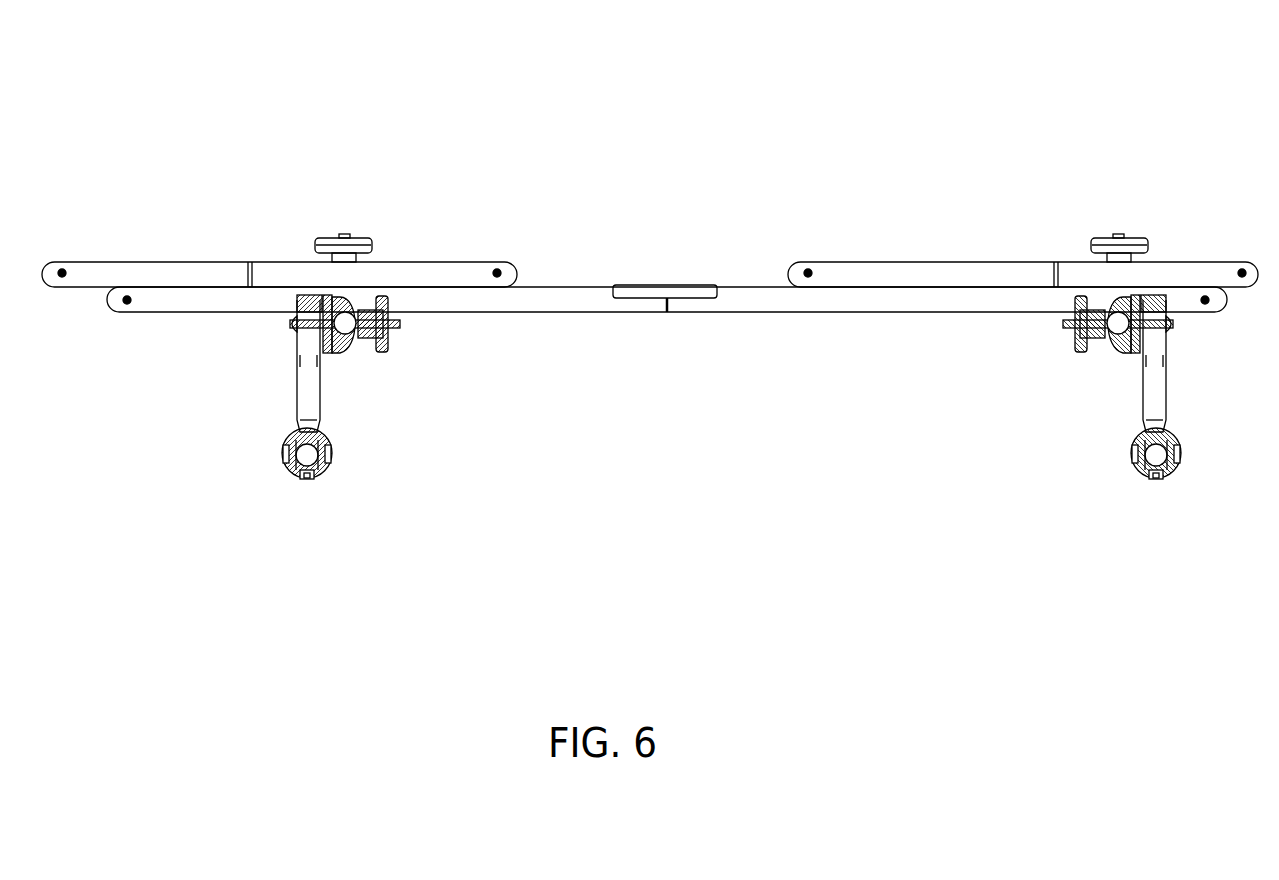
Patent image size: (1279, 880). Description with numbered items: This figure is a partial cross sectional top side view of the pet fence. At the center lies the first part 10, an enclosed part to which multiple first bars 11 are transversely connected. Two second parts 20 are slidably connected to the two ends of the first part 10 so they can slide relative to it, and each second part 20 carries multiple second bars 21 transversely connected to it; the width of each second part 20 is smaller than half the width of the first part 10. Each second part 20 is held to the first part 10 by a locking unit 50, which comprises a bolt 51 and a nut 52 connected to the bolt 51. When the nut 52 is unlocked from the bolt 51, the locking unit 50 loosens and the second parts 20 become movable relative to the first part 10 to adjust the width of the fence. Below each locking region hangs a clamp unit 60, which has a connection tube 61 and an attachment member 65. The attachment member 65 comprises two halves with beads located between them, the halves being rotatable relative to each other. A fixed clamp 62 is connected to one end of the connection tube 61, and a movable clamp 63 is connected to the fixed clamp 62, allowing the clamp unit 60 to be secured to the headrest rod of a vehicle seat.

The first part 10 is at (667, 284).
The first bars 11 is at (556, 305).
The second parts 20 is at (650, 200).
The second bars 21 is at (270, 262).
The locking unit 50 is at (324, 221).
The bolt 51 is at (290, 324).
The nut 52 is at (388, 343).
The clamp unit 60 is at (650, 424).
The connection tube 61 is at (312, 413).
The fixed clamp 62 is at (298, 431).
The movable clamp 63 is at (295, 478).
The attachment member 65 is at (330, 353).